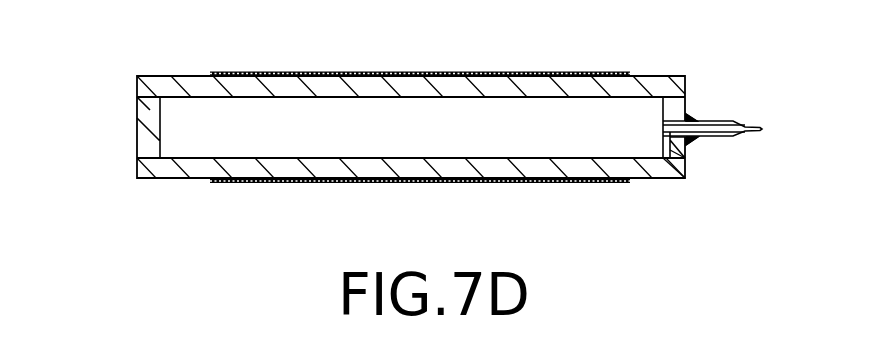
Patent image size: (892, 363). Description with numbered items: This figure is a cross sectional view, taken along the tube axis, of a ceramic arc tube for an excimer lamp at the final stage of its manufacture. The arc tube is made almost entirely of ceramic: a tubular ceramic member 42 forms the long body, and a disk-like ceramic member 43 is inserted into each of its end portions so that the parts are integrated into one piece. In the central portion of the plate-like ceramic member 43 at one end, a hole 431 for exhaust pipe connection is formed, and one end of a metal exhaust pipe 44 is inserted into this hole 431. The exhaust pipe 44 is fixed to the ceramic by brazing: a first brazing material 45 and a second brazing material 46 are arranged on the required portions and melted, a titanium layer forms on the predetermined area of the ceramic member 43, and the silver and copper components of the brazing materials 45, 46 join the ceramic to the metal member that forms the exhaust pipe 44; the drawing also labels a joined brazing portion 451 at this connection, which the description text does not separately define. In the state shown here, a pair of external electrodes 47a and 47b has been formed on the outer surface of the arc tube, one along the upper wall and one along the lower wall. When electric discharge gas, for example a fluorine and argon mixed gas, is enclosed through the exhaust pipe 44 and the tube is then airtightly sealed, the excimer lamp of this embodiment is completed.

The tubular ceramic member 42 is at (192, 75).
The disk-like ceramic member 43 is at (137, 127).
The exhaust pipe 44 is at (720, 121).
The first brazing material 45 is at (692, 141).
The second brazing material 46 is at (692, 129).
The external electrode 47a is at (344, 72).
The external electrode 47b is at (340, 184).
The hole 431 is at (673, 179).
The plug 451 is at (693, 143).